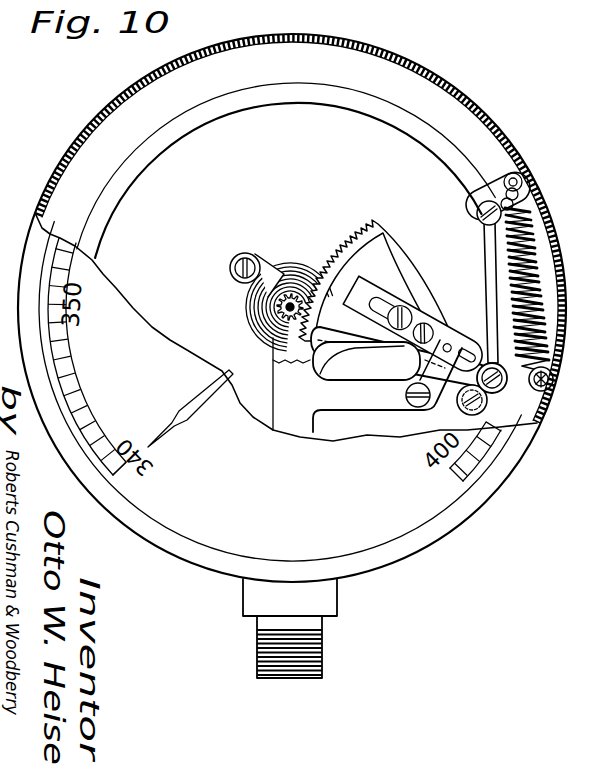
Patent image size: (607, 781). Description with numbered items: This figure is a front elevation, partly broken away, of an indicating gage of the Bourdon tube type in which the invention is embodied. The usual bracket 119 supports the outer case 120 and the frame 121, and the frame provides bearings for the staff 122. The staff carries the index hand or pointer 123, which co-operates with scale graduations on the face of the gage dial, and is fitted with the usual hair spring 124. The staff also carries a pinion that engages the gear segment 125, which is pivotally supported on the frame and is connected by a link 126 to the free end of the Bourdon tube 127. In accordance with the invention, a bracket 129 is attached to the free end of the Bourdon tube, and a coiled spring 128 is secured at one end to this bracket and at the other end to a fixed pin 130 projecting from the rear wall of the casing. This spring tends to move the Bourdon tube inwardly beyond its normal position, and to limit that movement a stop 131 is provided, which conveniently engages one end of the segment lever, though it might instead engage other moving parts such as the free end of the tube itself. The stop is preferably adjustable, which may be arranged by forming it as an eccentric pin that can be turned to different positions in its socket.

The bracket 119 is at (327, 605).
The outer case 120 is at (433, 538).
The frame 121 is at (291, 384).
The staff 122 is at (273, 342).
The index hand or pointer 123 is at (197, 414).
The hair spring 124 is at (250, 313).
The gear segment 125 is at (382, 232).
The link 126 is at (487, 280).
The Bourdon tube 127 is at (430, 145).
The coiled spring 128 is at (530, 233).
The bracket 129 is at (506, 175).
The fixed pin 130 is at (530, 388).
The stop 131 is at (457, 403).